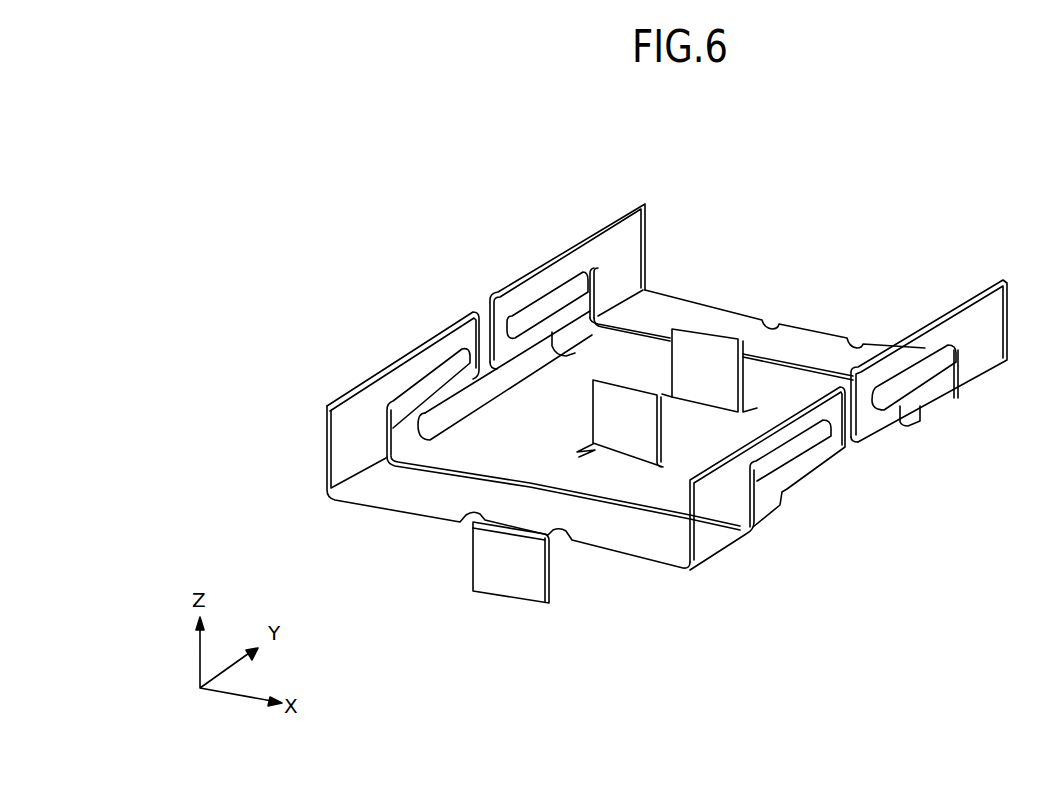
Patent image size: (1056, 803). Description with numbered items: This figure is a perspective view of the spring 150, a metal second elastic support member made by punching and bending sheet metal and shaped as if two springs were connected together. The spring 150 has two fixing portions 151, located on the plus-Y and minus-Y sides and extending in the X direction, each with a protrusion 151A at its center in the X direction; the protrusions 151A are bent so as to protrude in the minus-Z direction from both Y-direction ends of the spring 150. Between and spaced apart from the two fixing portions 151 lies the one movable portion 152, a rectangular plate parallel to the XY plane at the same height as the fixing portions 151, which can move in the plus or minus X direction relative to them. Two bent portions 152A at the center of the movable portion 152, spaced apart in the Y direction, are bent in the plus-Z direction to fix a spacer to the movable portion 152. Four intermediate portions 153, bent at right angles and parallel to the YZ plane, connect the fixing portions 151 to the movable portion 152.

The spring 150 is at (921, 173).
The fixing portion 151 is at (747, 331).
The protrusion 151A is at (832, 336).
The movable portion 152 is at (632, 489).
The bent portion 152A is at (697, 368).
The intermediate portion 153 is at (415, 367).